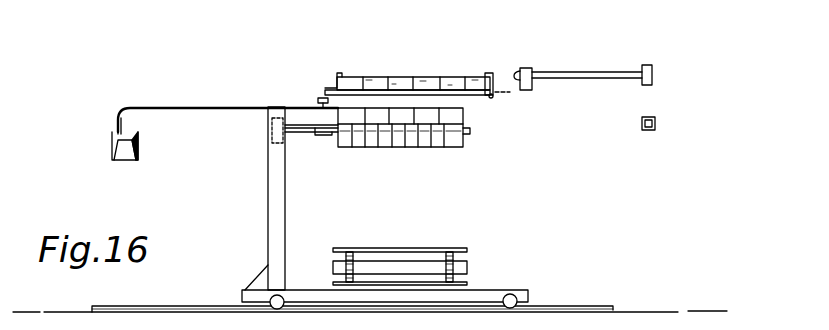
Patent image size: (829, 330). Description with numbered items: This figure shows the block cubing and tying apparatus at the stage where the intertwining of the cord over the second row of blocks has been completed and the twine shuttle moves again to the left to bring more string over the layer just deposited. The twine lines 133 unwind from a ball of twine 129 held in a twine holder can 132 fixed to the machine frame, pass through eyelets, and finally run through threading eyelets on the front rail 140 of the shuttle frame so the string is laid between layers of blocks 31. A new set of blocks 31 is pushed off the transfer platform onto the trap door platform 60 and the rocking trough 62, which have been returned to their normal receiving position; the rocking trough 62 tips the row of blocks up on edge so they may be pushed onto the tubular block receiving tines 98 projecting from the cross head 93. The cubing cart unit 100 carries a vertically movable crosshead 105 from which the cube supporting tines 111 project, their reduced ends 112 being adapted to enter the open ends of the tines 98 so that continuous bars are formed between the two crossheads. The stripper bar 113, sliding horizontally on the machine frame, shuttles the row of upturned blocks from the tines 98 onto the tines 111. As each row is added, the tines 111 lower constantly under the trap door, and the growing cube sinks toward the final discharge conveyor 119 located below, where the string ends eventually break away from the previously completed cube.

The cubing cart unit 100 is at (266, 193).
The lines 133 is at (211, 108).
The ball of twine 129 is at (130, 130).
The twine holder cans 132 is at (112, 146).
The crosshead 105 is at (272, 131).
The front rail 140 is at (320, 98).
The trap door platform 60 is at (372, 90).
The blocks 31 is at (422, 78).
The rocking trough 62 is at (492, 98).
The reduced end 112 is at (466, 132).
The cube supporting tines 111 is at (318, 133).
The block receiving tines 98 is at (578, 72).
The cross head 93 is at (652, 74).
The stripper bar 113 is at (655, 123).
The final discharge conveyor 119 is at (402, 248).